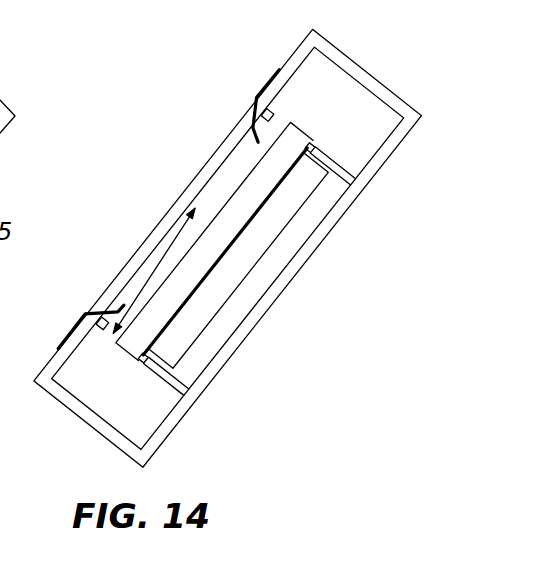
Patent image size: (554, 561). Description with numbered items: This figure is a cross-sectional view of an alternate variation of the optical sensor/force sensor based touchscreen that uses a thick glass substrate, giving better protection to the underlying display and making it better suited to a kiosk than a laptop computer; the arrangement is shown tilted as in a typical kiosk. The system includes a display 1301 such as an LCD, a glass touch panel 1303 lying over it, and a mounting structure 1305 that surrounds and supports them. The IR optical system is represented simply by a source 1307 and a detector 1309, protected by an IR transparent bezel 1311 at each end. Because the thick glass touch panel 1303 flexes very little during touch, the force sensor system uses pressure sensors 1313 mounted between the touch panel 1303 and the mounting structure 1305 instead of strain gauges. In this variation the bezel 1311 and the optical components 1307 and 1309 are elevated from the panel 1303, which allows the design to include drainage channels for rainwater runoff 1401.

The display 1301 is at (282, 223).
The glass touch panel 1303 is at (265, 166).
The mounting structure 1305 is at (344, 213).
The source 1307 is at (80, 318).
The detector 1309 is at (274, 112).
The IR transparent bezel 1311 is at (258, 95).
The pressure sensors 1313 is at (313, 143).
The drainage channels for rainwater runoff 1401 is at (153, 268).